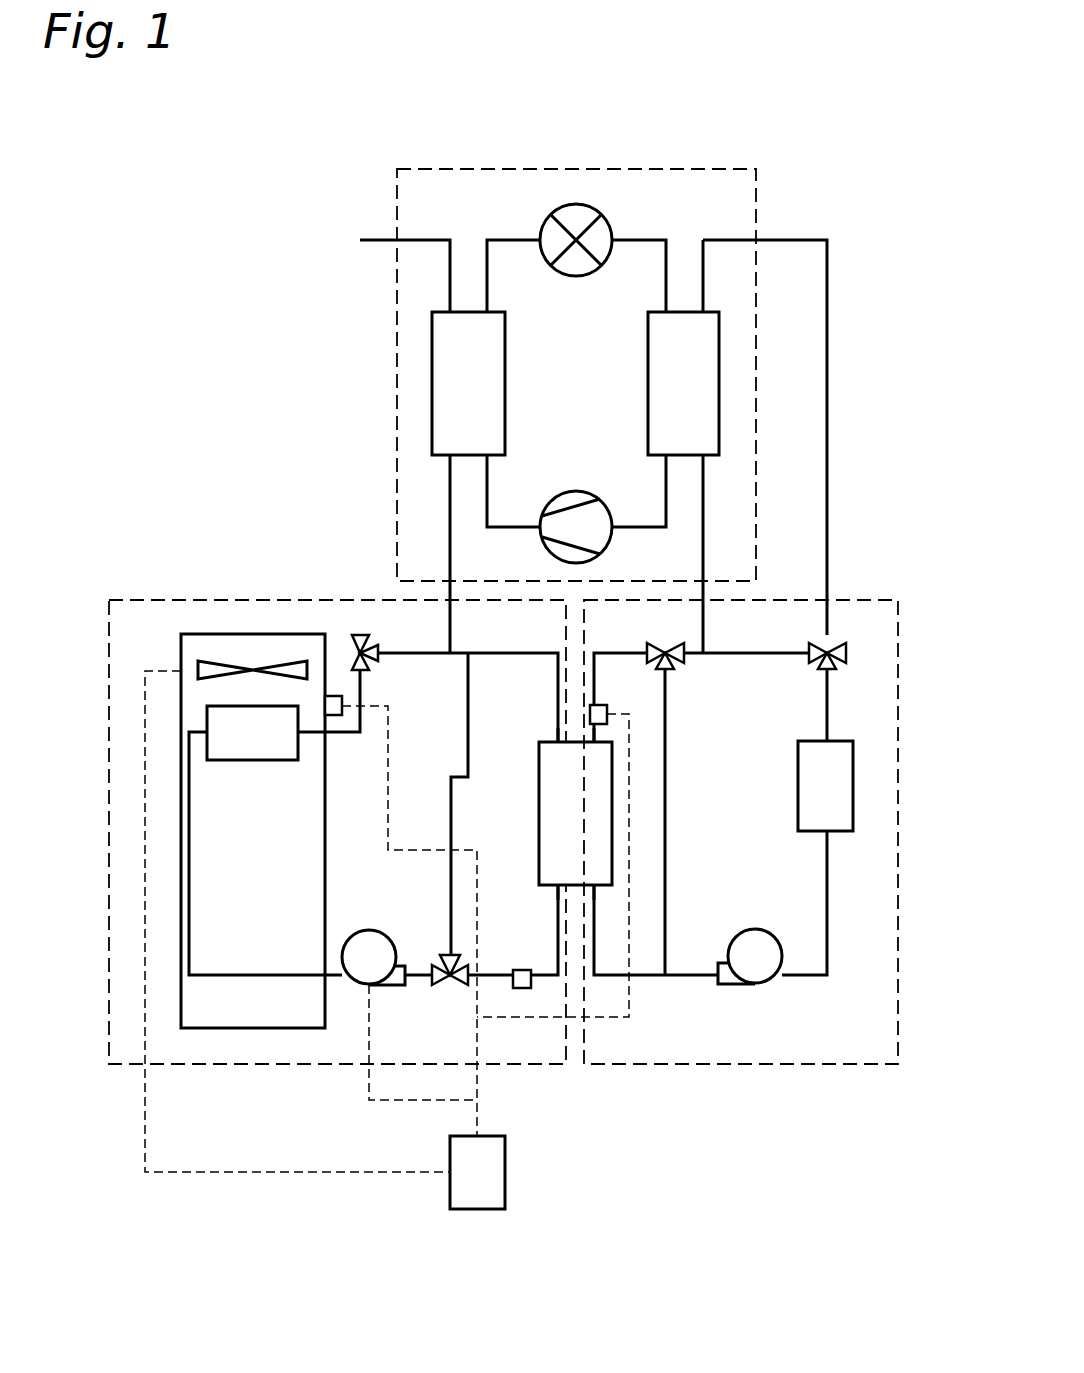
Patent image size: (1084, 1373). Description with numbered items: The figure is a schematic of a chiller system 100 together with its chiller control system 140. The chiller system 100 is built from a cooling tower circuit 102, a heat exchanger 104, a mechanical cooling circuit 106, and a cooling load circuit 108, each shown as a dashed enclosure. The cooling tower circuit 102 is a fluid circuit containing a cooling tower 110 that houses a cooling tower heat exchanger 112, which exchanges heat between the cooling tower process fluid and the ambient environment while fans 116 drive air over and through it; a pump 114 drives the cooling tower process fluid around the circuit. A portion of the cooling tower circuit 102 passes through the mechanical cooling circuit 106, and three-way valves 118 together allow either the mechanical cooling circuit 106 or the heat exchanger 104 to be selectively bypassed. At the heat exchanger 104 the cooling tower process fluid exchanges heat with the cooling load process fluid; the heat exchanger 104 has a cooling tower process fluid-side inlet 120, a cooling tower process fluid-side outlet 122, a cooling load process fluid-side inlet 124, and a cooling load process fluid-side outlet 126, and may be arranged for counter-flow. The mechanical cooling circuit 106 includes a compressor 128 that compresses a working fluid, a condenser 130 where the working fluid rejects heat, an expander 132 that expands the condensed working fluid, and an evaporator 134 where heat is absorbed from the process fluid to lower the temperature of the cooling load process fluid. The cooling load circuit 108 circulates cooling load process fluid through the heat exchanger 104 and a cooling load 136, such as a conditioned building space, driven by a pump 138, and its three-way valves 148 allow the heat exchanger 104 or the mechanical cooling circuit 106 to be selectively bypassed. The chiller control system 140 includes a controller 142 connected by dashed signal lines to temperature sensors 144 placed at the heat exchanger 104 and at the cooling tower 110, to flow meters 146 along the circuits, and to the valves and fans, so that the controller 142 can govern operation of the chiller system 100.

The chiller system 100 is at (758, 105).
The cooling tower circuit 102 is at (137, 598).
The heat exchanger 104 is at (539, 836).
The mechanical cooling circuit 106 is at (428, 168).
The cooling load circuit 108 is at (863, 598).
The cooling tower 110 is at (230, 634).
The cooling tower heat exchanger 112 is at (233, 760).
The pump 114 is at (350, 932).
The fans 116 is at (283, 661).
The three-way valves 118 is at (372, 645).
The cooling tower process fluid-side inlet 120 is at (558, 885).
The cooling tower process fluid-side outlet 122 is at (558, 742).
The cooling load process fluid-side inlet 124 is at (597, 742).
The cooling load process fluid-side outlet 126 is at (597, 886).
The compressor 128 is at (553, 498).
The condenser 130 is at (505, 330).
The expander 132 is at (588, 204).
The evaporator 134 is at (648, 385).
The cooling load 136 is at (798, 772).
The pump 138 is at (757, 930).
The chiller control system 140 is at (435, 1232).
The controller 142 is at (505, 1190).
The temperature sensors 144 is at (335, 696).
The flow meters 146 is at (523, 988).
The three-way valves 148 is at (672, 660).